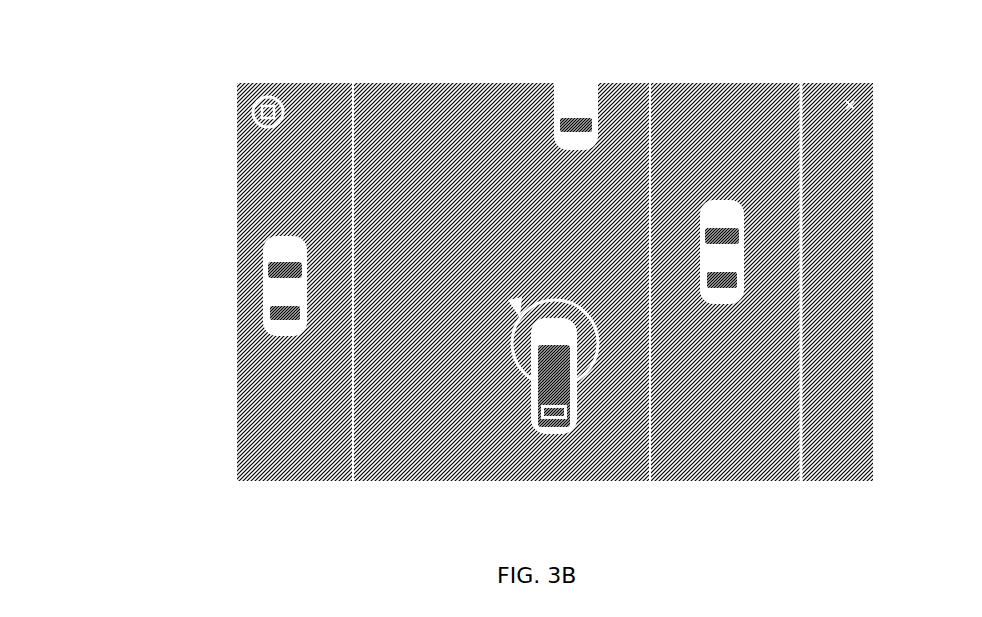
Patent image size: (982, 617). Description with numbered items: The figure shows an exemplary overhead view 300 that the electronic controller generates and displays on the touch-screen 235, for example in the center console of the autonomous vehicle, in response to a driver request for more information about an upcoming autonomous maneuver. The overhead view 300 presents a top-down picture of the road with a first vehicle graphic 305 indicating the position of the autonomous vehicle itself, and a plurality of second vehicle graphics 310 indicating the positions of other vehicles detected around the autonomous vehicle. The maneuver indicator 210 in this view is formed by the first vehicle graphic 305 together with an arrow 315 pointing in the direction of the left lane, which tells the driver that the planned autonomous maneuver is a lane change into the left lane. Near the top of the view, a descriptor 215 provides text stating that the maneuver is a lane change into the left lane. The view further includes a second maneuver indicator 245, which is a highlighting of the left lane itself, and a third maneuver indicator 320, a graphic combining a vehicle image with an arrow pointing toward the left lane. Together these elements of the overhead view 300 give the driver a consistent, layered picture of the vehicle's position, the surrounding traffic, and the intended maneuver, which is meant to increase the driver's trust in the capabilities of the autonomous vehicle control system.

The overhead view 300 is at (134, 149).
The third maneuver indicator 320 is at (262, 93).
The descriptor 215 is at (408, 100).
The touch-screen 235 is at (757, 82).
The second maneuver indicator 245 is at (401, 263).
The second vehicle graphics 310 is at (248, 285).
The arrow 315 is at (508, 307).
The first vehicle graphic 305 is at (572, 387).
The maneuver indicator 210 is at (504, 416).